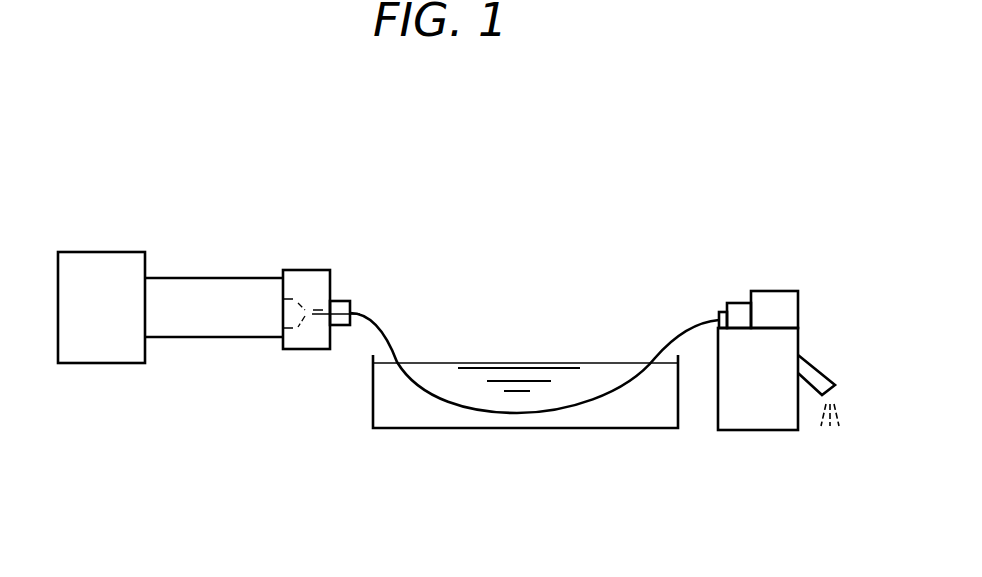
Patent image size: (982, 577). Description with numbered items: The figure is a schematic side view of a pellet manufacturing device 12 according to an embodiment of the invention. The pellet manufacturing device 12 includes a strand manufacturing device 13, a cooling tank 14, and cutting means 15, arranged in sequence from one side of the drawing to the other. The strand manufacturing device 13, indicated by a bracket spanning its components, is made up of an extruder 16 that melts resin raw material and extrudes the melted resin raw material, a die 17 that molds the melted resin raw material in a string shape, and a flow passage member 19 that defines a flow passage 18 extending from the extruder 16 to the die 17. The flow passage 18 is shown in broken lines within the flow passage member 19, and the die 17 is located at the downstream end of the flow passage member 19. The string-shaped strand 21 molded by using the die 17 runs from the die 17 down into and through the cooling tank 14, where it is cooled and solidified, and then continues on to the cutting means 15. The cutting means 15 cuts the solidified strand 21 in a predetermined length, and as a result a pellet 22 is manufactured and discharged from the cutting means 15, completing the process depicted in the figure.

The pellet manufacturing device 12 is at (543, 155).
The strand manufacturing device 13 is at (388, 233).
The cooling tank 14 is at (385, 422).
The cutting means 15 is at (768, 307).
The extruder 16 is at (187, 297).
The die 17 is at (340, 302).
The flow passage 18 is at (298, 328).
The flow passage member 19 is at (293, 277).
The strand 21 is at (385, 330).
The pellet 22 is at (837, 398).